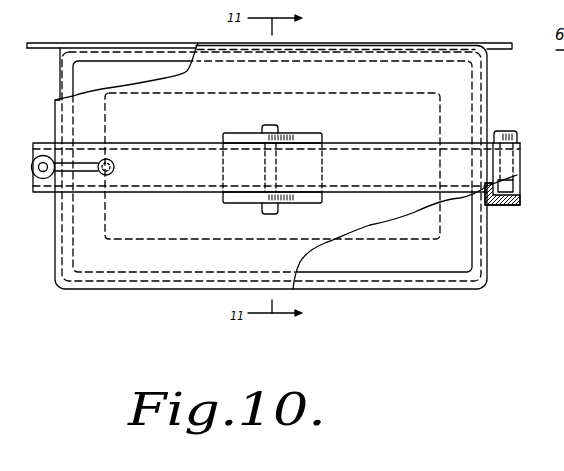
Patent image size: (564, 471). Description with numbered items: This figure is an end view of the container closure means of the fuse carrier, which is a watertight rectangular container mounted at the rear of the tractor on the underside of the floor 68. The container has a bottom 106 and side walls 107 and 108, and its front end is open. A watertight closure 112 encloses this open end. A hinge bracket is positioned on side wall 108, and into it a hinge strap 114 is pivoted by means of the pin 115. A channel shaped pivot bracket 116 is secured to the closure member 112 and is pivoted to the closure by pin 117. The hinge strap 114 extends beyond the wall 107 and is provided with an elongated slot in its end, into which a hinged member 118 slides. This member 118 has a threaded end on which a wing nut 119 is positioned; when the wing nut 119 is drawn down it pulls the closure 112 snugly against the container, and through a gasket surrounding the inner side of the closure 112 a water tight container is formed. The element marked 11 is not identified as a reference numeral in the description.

The rear side flooring 68 is at (55, 43).
The bottom 106 is at (390, 281).
The side wall 107 is at (72, 80).
The side wall 108 is at (472, 251).
The watertight closure 112 is at (411, 137).
The hinge strap 114 is at (276, 167).
The pin 115 is at (525, 123).
The channel shaped pivot bracket 116 is at (240, 201).
The pin 117 is at (281, 119).
The hinged member 118 is at (35, 159).
The wing nut 119 is at (115, 165).
The boss 11 is at (522, 182).